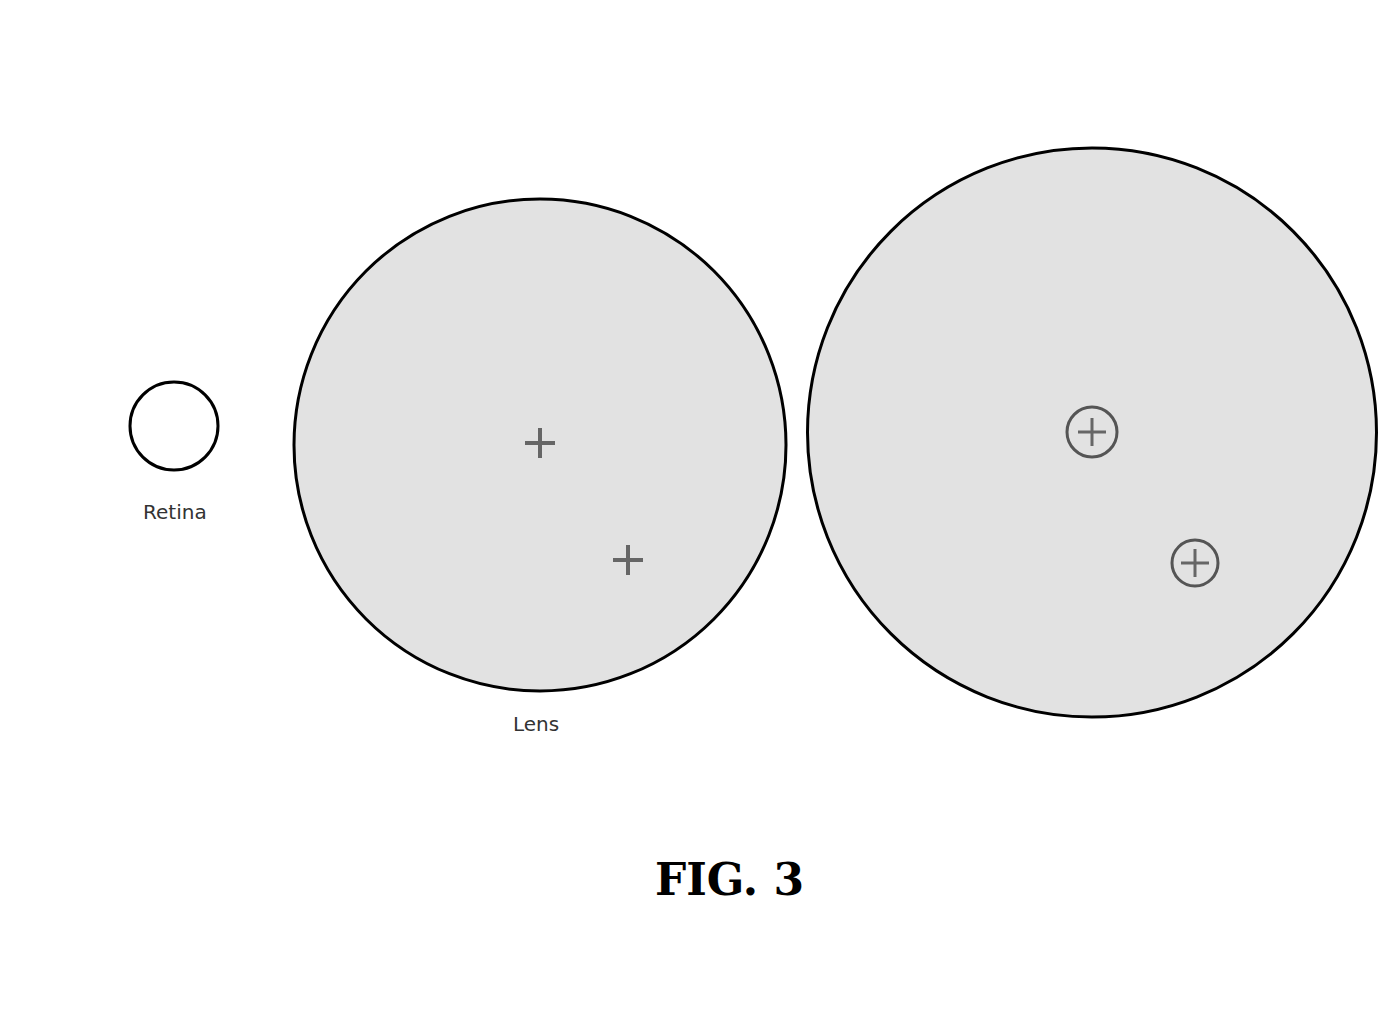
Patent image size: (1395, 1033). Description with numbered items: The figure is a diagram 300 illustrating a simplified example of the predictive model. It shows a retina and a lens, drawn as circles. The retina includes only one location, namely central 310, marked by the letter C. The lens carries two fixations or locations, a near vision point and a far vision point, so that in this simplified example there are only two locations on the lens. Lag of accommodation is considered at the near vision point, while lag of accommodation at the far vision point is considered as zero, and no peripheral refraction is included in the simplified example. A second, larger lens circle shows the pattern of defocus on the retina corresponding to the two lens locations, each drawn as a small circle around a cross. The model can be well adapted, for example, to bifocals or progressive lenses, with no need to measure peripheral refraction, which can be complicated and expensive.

The diagram 300 is at (128, 66).
The central 310 is at (192, 464).